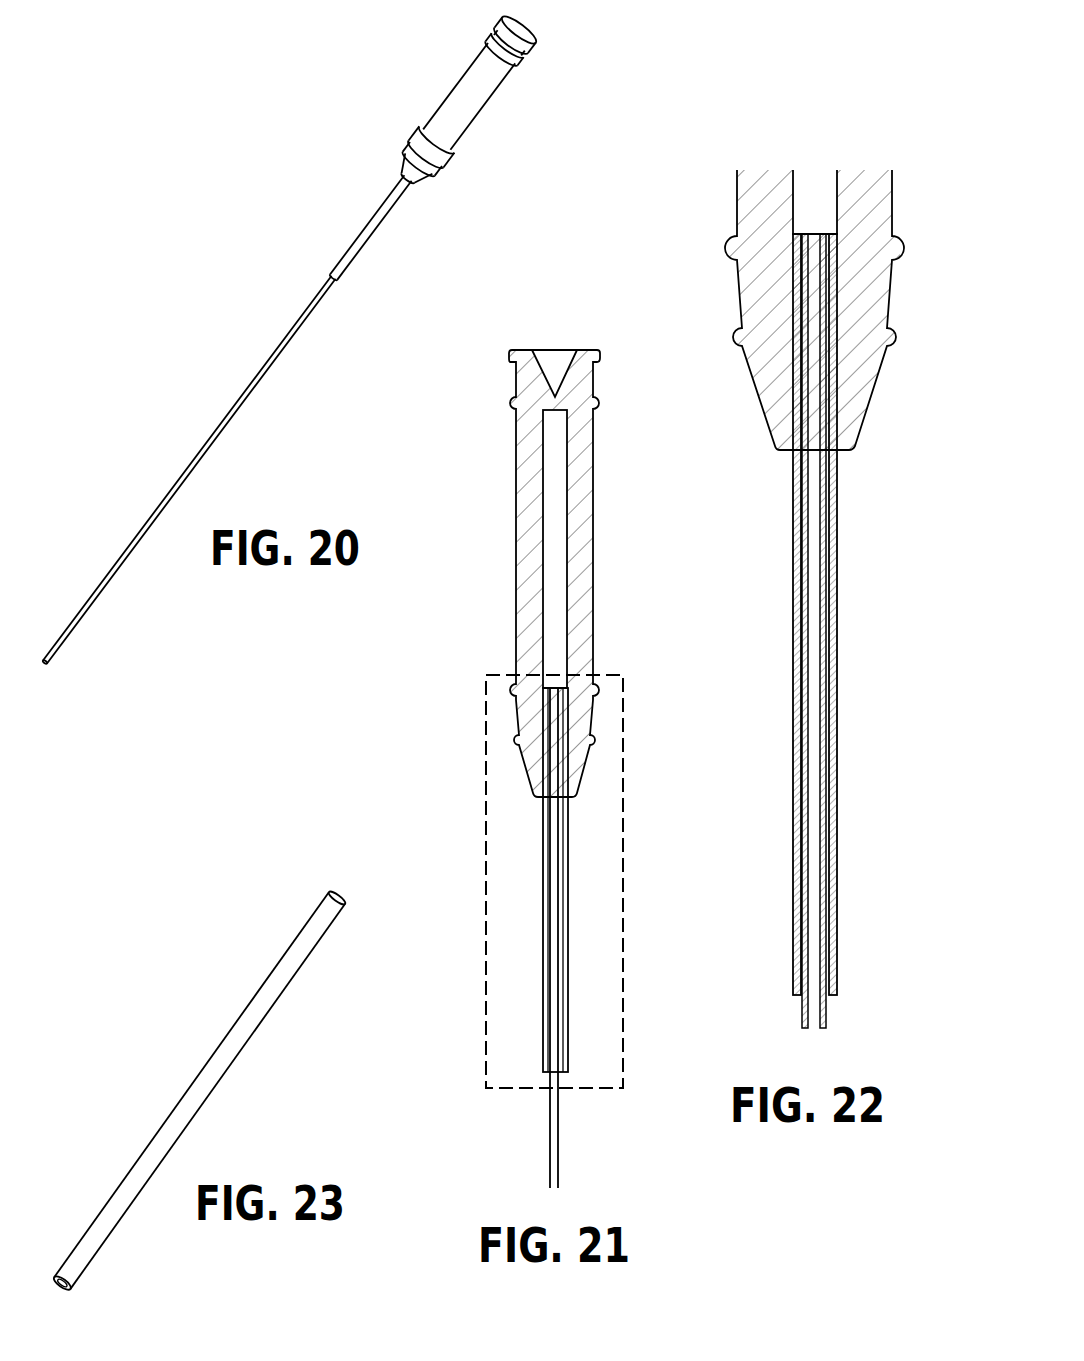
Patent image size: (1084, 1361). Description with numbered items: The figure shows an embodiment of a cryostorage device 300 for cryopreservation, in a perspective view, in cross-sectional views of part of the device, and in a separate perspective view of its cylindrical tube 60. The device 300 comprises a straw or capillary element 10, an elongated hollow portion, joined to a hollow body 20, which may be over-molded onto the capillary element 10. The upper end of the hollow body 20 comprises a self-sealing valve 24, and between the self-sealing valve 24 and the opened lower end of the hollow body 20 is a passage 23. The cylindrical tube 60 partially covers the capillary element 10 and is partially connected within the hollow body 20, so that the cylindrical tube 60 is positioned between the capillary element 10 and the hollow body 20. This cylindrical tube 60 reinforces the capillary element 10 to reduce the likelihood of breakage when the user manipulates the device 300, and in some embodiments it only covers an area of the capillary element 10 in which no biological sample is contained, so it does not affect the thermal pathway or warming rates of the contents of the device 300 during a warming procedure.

In FIG. 20, the capillary element 10 is at (175, 480).
In FIG. 21, the capillary element 10 is at (562, 1138).
In FIG. 22, the capillary element 10 is at (820, 730).
In FIG. 20, the hollow body 20 is at (458, 107).
In FIG. 21, the hollow body 20 is at (596, 529).
In FIG. 22, the hollow body 20 is at (809, 288).
In FIG. 21, the passage 23 is at (553, 550).
In FIG. 22, the passage 23 is at (812, 200).
In FIG. 21, the self-sealing valve 24 is at (553, 365).
In FIG. 20, the cylindrical tube 60 is at (375, 222).
In FIG. 21, the cylindrical tube 60 is at (563, 960).
In FIG. 22, the cylindrical tube 60 is at (835, 510).
In FIG. 23, the cylindrical tube 60 is at (222, 1052).
In FIG. 20, the cryostorage device 300 is at (291, 338).
In FIG. 21, the cryostorage device 300 is at (552, 720).
In FIG. 22, the cryostorage device 300 is at (795, 574).